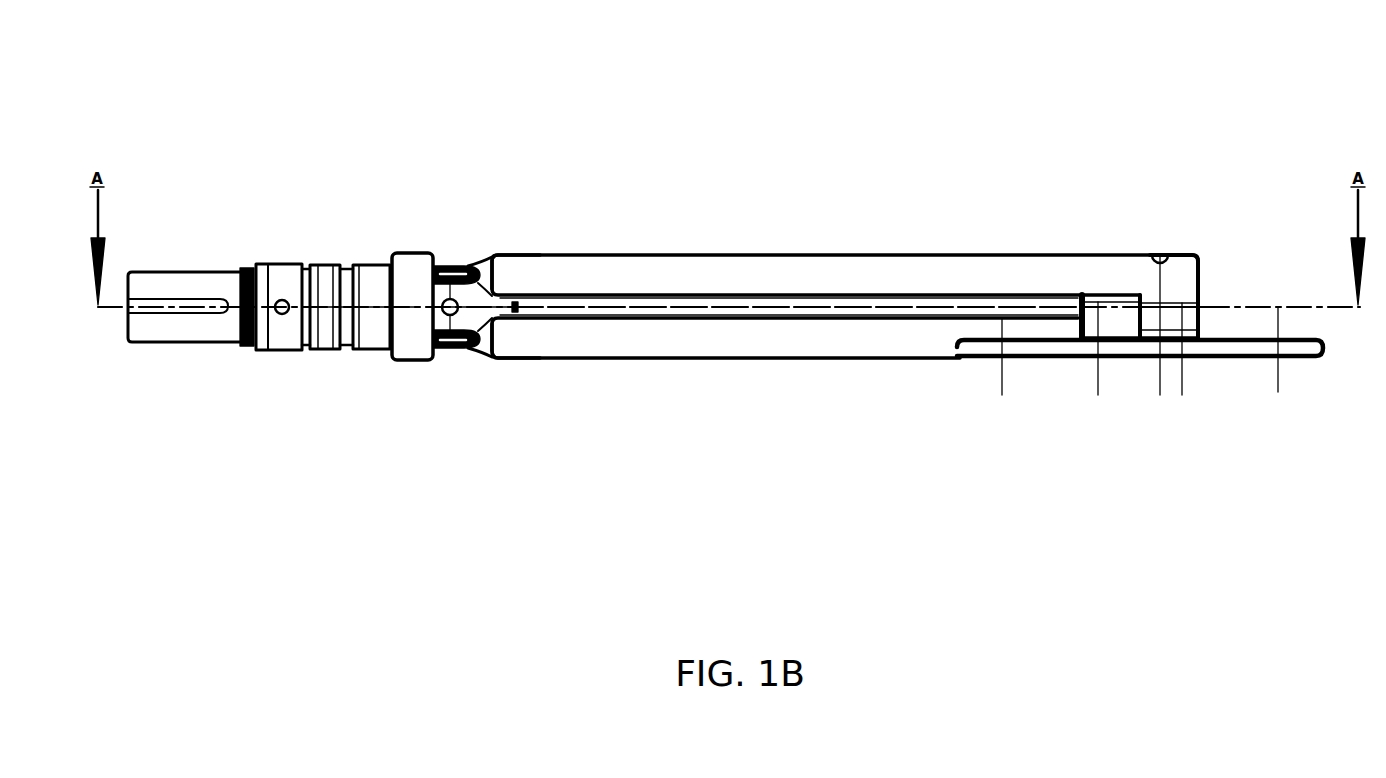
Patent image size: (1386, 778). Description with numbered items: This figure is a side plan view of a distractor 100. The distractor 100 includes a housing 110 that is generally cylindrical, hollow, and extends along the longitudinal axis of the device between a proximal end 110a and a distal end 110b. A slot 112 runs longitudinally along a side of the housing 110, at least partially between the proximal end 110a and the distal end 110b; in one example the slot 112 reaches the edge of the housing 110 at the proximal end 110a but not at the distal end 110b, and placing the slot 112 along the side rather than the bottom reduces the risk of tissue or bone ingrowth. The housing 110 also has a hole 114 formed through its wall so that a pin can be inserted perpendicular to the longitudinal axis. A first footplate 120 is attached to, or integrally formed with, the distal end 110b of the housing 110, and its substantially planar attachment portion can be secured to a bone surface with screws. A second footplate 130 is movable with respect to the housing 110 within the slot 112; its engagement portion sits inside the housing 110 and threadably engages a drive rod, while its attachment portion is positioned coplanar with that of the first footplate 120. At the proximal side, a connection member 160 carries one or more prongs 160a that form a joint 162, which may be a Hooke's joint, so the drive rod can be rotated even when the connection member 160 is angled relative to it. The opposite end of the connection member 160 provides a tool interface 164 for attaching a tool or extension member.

The distractor 100 is at (752, 118).
The housing 110 is at (846, 222).
The proximal end 110a is at (534, 250).
The distal end 110b is at (1192, 236).
The slot 112 is at (605, 300).
The hole 114 is at (1146, 231).
The first footplate 120 is at (1233, 372).
The second footplate 130 is at (1067, 372).
The connection member 160 is at (318, 247).
The prong 160a is at (462, 258).
The joint 162 is at (462, 362).
The tool interface 164 is at (163, 344).